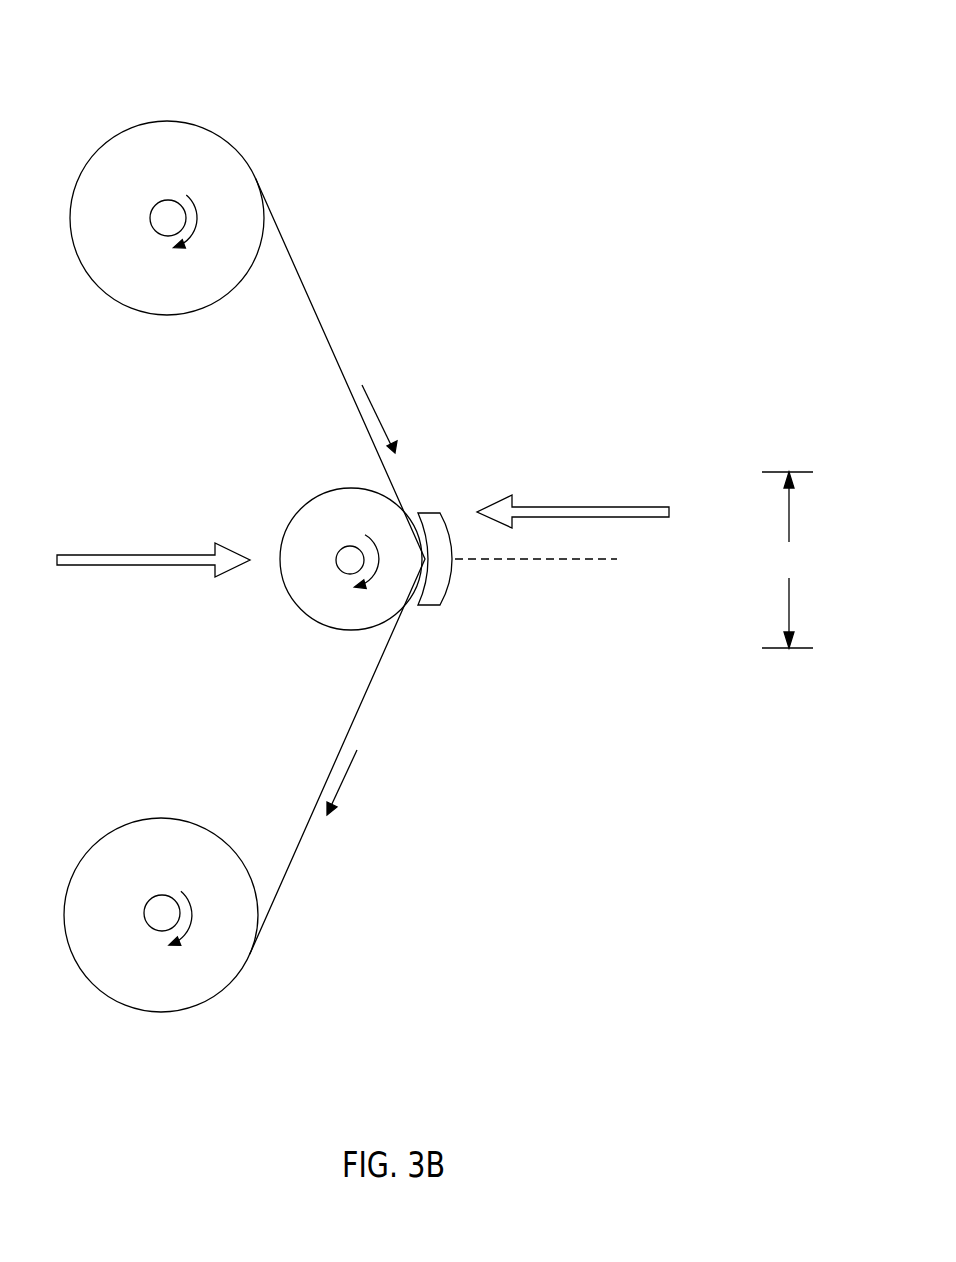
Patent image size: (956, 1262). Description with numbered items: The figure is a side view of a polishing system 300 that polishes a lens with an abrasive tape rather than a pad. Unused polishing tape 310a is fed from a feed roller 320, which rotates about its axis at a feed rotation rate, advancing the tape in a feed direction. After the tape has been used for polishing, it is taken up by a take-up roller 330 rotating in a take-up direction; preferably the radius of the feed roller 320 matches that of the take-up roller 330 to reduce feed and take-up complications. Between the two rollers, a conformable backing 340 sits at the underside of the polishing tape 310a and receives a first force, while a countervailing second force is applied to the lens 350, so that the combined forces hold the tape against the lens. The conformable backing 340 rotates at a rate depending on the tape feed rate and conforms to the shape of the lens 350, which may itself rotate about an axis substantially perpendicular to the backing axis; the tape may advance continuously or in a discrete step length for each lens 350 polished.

The polishing system 300 is at (495, 62).
The polishing tape 310a is at (325, 332).
The feed roller 320 is at (160, 317).
The take-up roller 330 is at (158, 818).
The conformable backing 340 is at (297, 608).
The lens 350 is at (440, 603).